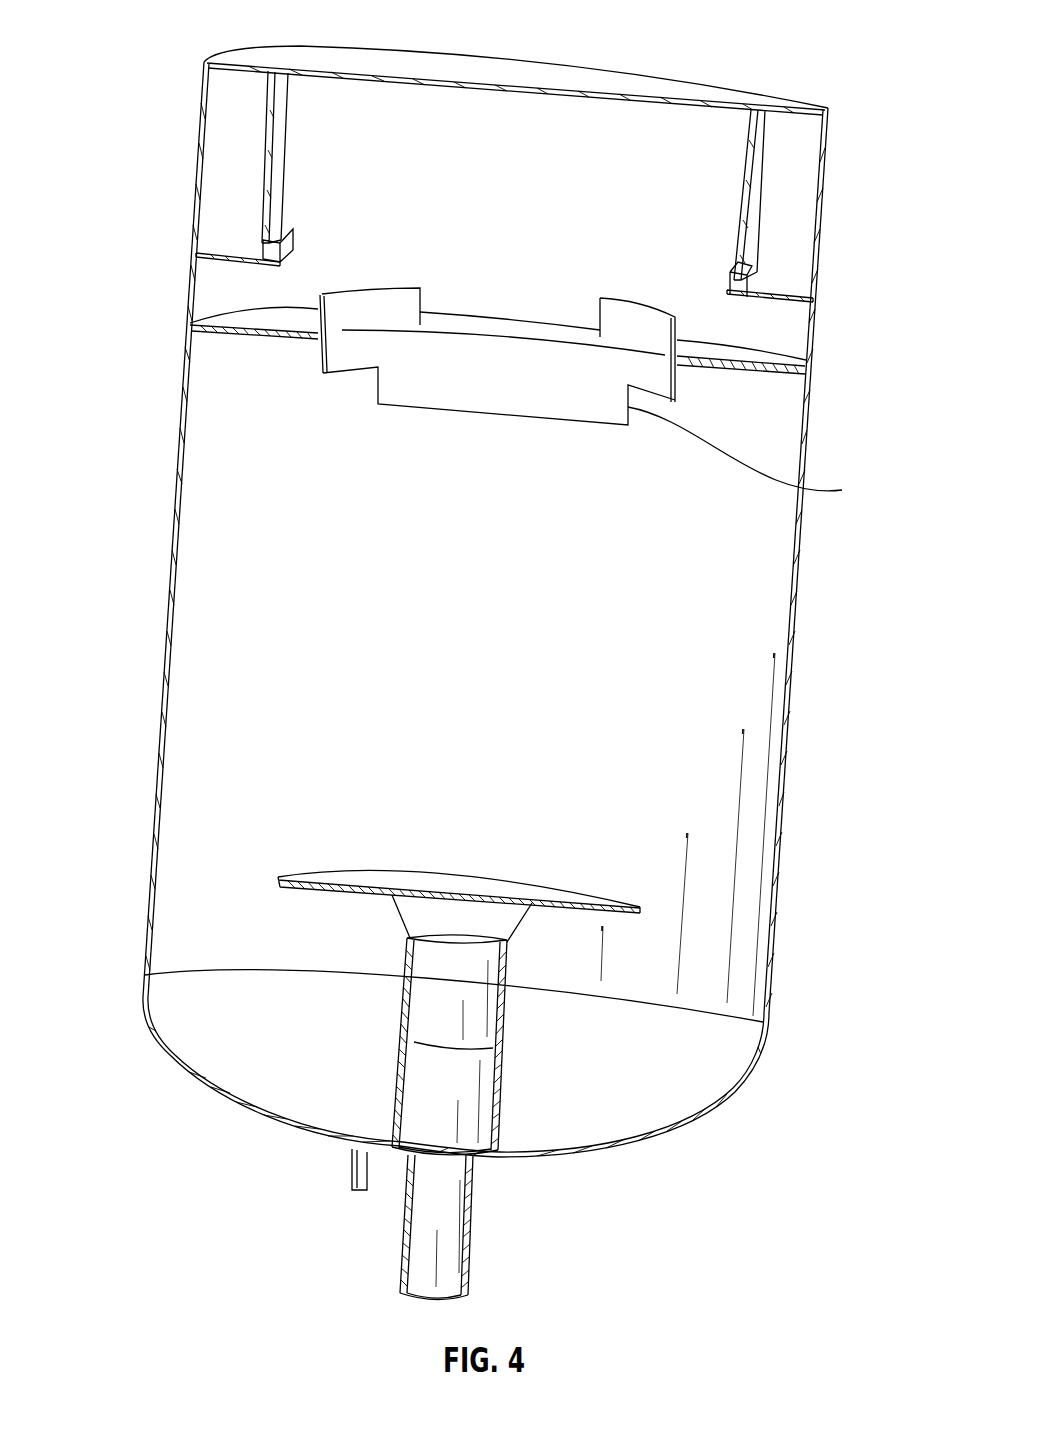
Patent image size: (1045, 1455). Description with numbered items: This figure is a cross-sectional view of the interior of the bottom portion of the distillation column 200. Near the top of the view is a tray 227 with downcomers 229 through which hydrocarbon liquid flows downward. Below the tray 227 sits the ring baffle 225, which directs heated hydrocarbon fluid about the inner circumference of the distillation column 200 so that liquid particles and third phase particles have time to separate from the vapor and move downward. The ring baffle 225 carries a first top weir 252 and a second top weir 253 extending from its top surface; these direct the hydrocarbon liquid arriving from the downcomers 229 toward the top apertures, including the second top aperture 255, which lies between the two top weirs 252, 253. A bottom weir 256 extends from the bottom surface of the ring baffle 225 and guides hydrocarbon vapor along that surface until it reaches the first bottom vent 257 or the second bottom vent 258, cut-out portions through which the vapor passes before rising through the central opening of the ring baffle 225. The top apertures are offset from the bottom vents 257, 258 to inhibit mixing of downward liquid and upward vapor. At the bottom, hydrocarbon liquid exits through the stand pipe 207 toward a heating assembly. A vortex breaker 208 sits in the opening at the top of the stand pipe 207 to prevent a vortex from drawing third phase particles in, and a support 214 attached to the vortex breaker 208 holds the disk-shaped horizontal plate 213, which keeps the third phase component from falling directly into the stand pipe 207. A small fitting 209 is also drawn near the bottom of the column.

The distillation column 200 is at (158, 30).
The tray 227 is at (790, 100).
The downcomers 229 is at (265, 162).
The second top weir 253 is at (318, 308).
The first top weir 252 is at (655, 335).
The ring baffle 225 is at (206, 332).
The second top aperture 255 is at (565, 320).
The bottom weir 256 is at (497, 395).
The first bottom vent 257 is at (757, 457).
The second bottom vent 258 is at (352, 390).
The horizontal plate 213 is at (278, 880).
The support 214 is at (393, 903).
The vortex breaker 208 is at (420, 1007).
The stand pipe 207 is at (415, 1097).
The drain fitting 209 is at (352, 1168).